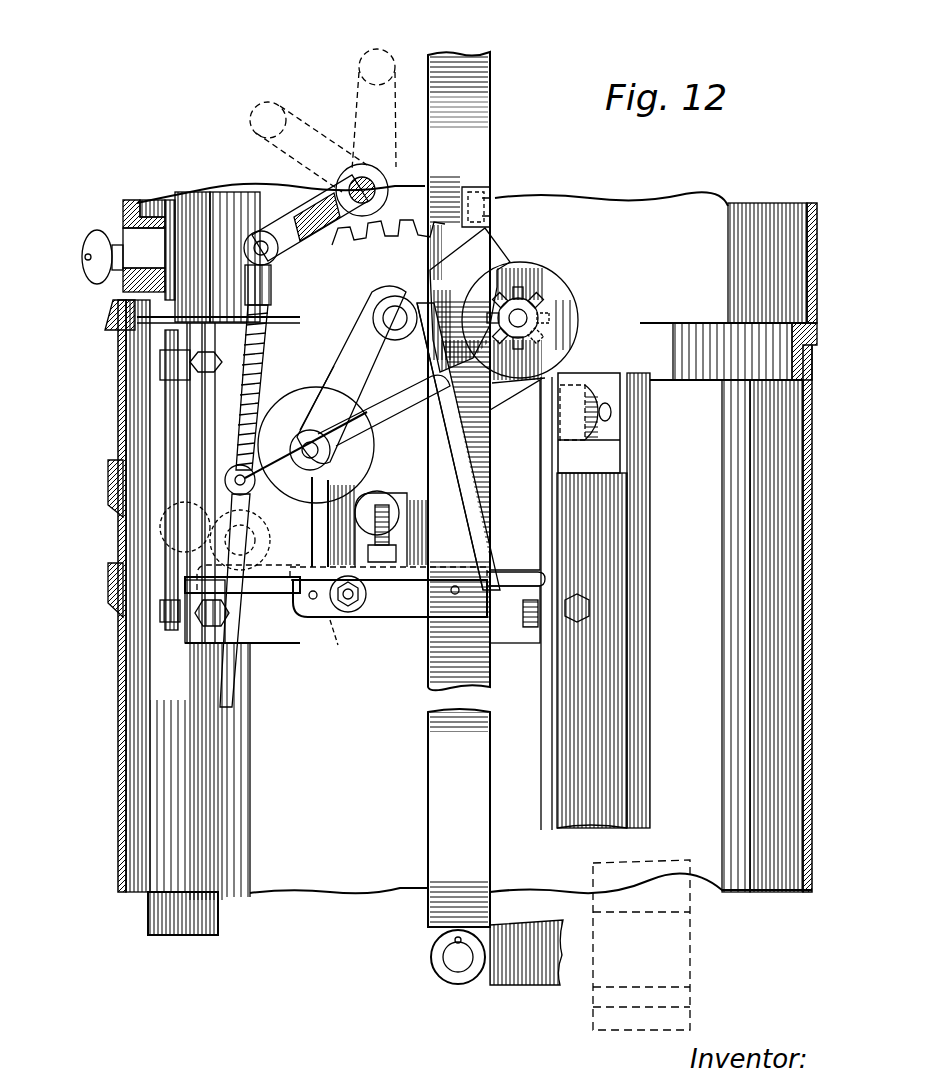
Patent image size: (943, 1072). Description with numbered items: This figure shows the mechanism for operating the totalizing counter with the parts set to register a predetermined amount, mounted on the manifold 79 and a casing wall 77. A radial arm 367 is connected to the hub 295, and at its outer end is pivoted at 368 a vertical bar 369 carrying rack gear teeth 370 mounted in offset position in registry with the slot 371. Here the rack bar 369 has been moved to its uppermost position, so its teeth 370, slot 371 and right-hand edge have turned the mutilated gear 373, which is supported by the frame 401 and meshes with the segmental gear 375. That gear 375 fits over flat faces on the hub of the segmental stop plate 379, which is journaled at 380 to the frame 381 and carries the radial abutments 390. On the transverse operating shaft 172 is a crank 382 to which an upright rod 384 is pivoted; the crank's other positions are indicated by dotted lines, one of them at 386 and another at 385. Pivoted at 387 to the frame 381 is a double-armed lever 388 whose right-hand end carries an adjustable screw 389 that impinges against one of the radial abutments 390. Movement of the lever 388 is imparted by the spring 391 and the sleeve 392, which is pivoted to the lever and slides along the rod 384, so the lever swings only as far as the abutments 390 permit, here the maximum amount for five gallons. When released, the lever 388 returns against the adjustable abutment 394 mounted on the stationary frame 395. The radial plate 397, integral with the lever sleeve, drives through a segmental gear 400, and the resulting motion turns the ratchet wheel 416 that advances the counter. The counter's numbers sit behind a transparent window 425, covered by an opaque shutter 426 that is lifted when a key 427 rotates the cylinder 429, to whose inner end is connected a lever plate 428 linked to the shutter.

The casing wall 77 is at (122, 700).
The manifold 79 is at (712, 222).
The transverse operating shaft 172 is at (377, 182).
The hub 295 is at (692, 965).
The radial arm 367 is at (520, 970).
The pivot 368 is at (452, 958).
The vertical bar 369 is at (472, 840).
The rack gear teeth 370 is at (470, 195).
The slot 371 is at (492, 193).
The mutilated gear 373 is at (540, 300).
The segmental gear 375 is at (281, 282).
The segmental stop plate 379 is at (470, 300).
The journal 380 is at (380, 270).
The frame 381 is at (482, 540).
The crank 382 is at (295, 196).
The upright rod 384 is at (268, 330).
The arm position 385 is at (398, 92).
The dotted line position 386 is at (300, 120).
The pivot 387 is at (335, 395).
The double-armed lever 388 is at (470, 492).
The adjustable screw 389 is at (465, 440).
The radial abutments 390 is at (558, 410).
The spring 391 is at (262, 350).
The sleeve 392 is at (245, 495).
The adjustable abutment 394 is at (430, 620).
The stationary frame 395 is at (318, 615).
The radial plate 397 is at (399, 514).
The segmental gear 400 is at (278, 600).
The frame 401 is at (548, 278).
The ratchet wheel 416 is at (348, 640).
The transparent window 425 is at (210, 542).
The opaque shutter 426 is at (125, 298).
The key 427 is at (100, 232).
The lever plate 428 is at (176, 255).
The cylinder 429 is at (144, 248).